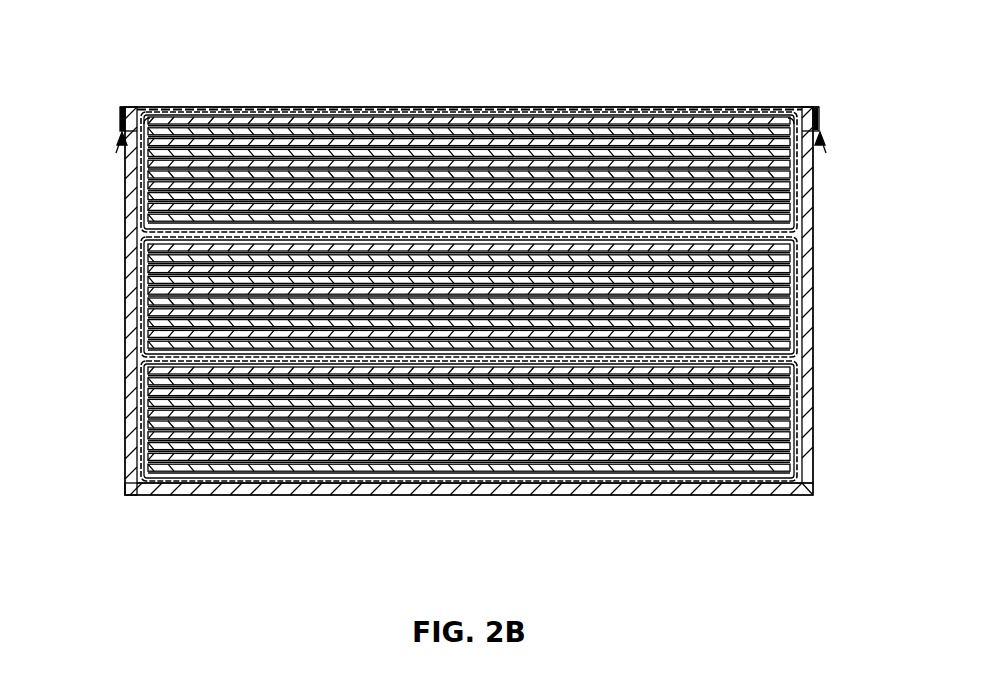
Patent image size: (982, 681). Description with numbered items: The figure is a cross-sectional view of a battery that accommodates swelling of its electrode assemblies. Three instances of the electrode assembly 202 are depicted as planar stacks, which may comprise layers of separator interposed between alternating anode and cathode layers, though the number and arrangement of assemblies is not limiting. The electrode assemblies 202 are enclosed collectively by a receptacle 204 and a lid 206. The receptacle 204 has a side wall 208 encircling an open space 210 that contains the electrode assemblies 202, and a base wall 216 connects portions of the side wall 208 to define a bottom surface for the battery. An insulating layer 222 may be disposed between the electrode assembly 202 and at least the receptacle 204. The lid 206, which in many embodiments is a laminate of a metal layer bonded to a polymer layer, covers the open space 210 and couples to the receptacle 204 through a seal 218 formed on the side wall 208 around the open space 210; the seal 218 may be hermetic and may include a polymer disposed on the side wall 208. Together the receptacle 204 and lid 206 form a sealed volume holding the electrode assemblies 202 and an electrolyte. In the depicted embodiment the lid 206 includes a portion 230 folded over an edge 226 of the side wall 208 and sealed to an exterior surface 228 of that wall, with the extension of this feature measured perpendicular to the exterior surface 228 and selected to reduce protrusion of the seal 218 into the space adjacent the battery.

The electrode assembly 202 is at (735, 186).
The receptacle 204 is at (125, 183).
The lid 206 is at (443, 107).
The side wall 208 is at (428, 333).
The open space 210 is at (812, 492).
The base wall 216 is at (560, 496).
The seal 218 is at (113, 154).
The insulating layer 222 is at (290, 496).
The edge 226 is at (131, 112).
The exterior surface 228 is at (145, 124).
The portion 230 is at (121, 118).